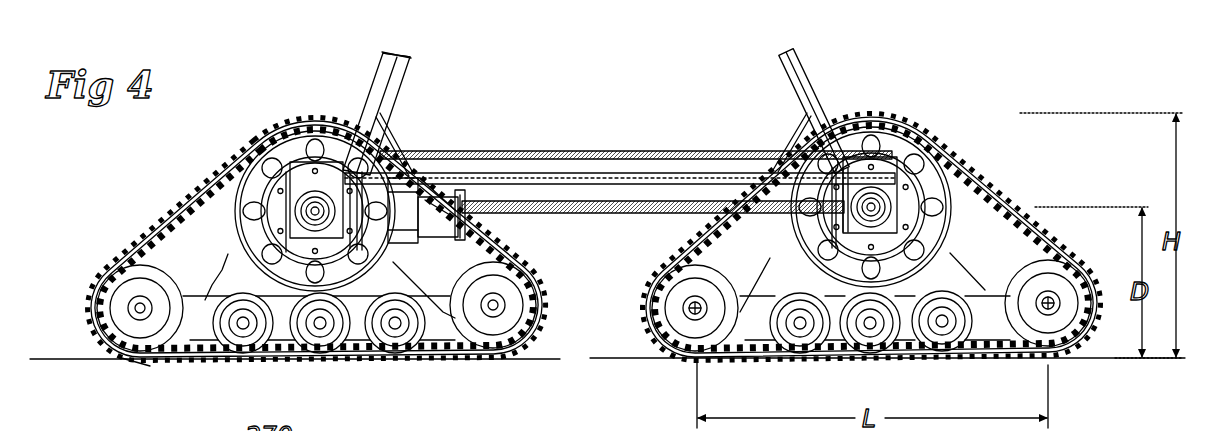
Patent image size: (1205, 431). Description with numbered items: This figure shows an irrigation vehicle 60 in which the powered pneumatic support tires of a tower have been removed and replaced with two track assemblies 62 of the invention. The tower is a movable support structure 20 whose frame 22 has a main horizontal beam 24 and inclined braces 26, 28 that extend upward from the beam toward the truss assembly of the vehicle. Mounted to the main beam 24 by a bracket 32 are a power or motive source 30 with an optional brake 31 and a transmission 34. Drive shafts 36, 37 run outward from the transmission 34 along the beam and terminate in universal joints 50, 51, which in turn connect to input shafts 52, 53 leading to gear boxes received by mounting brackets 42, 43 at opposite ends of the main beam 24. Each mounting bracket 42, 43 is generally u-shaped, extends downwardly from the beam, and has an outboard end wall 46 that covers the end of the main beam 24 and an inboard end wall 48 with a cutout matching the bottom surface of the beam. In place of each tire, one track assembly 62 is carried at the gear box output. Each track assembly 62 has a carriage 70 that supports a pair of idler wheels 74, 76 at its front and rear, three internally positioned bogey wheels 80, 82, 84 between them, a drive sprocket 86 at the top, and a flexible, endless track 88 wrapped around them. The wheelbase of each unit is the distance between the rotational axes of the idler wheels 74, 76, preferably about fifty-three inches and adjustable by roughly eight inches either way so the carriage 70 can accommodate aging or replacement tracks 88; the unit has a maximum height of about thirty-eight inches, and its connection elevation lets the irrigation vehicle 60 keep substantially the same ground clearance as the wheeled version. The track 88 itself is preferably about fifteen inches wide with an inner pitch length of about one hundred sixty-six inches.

The movable support structure 20 is at (371, 73).
The frame 22 is at (587, 150).
The main horizontal beam 24 is at (629, 160).
The inclined brace 26 is at (780, 57).
The inclined brace 28 is at (412, 66).
The power or motive source 30 is at (443, 198).
The brake 31 is at (462, 200).
The bracket 32 is at (423, 188).
The transmission 34 is at (418, 240).
The drive shaft 36 is at (612, 213).
The drive shaft 37 is at (403, 210).
The mounting bracket 42 is at (790, 261).
The mounting bracket 43 is at (292, 243).
The outboard end wall 46 is at (290, 214).
The inboard end wall 48 is at (827, 182).
The universal joint 50 is at (838, 212).
The universal joint 51 is at (360, 205).
The input shaft 52 is at (820, 227).
The input shaft 53 is at (352, 200).
The irrigation vehicle 60 is at (935, 90).
The track assembly 62 is at (183, 190).
The carriage 70 is at (198, 343).
The idler wheel 74 is at (115, 319).
The idler wheel 76 is at (513, 290).
The bogey wheel 80 is at (224, 342).
The bogey wheel 82 is at (298, 344).
The bogey wheel 84 is at (408, 348).
The drive sprocket 86 is at (232, 208).
The flexible endless track 88 is at (140, 367).